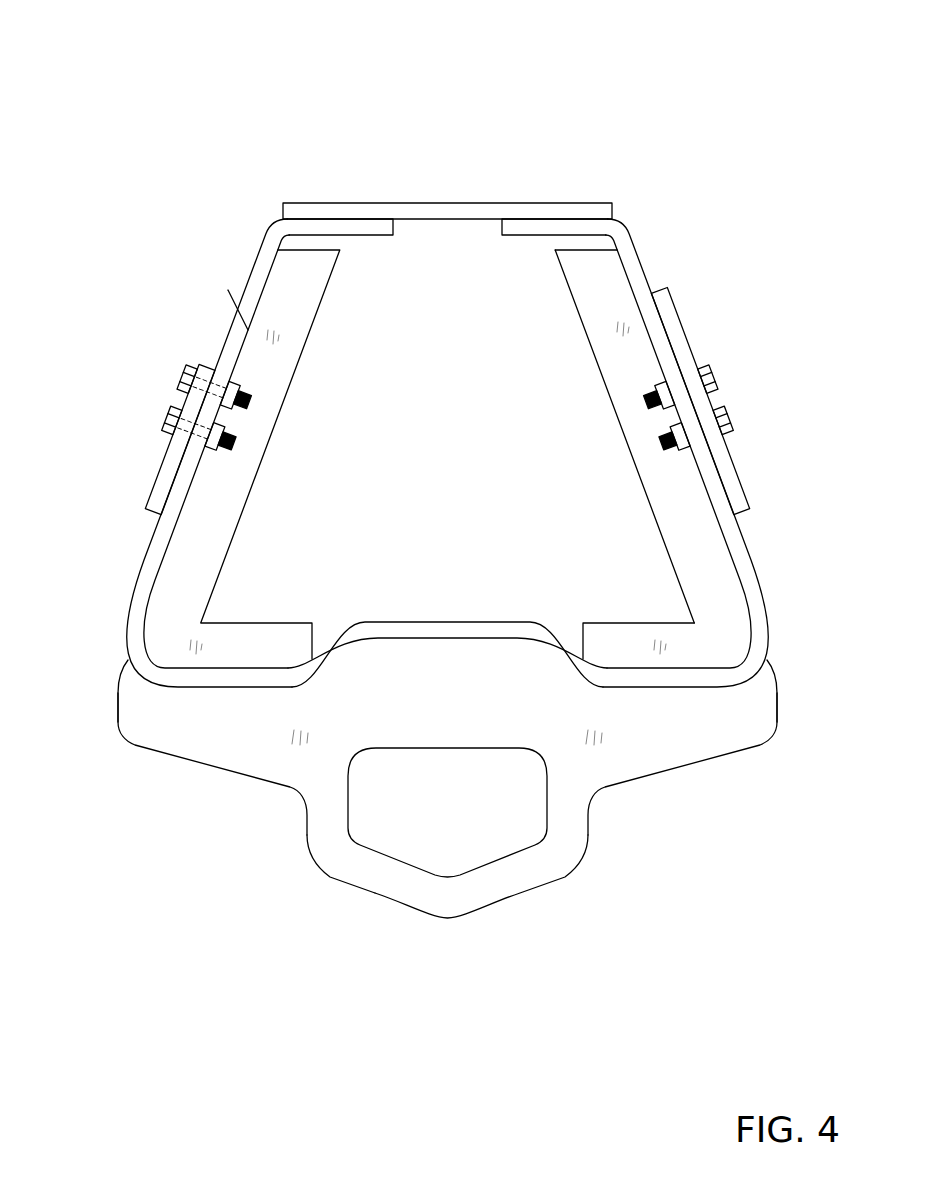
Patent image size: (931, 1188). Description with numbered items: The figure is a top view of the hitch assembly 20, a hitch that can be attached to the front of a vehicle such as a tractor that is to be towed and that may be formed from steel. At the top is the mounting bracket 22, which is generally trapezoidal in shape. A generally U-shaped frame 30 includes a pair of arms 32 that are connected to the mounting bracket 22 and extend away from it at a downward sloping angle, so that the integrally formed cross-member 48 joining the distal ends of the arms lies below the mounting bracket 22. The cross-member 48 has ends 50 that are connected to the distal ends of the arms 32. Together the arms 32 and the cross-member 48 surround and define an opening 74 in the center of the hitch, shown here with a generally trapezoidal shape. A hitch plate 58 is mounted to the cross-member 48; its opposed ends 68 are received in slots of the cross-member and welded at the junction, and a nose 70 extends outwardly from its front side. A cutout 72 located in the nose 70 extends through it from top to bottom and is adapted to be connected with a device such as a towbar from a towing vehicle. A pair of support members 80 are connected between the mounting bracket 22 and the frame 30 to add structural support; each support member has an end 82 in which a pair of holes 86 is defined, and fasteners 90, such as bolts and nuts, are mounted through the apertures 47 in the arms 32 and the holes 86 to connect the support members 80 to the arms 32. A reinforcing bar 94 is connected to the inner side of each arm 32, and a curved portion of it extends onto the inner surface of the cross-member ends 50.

The hitch assembly 20 is at (225, 111).
The mounting bracket 22 is at (412, 201).
The frame 30 is at (769, 599).
The arm 32 is at (263, 312).
The aperture 47 is at (223, 375).
The cross-member 48 is at (439, 620).
The cross-member end 50 is at (687, 687).
The hitch plate 58 is at (358, 896).
The opposed end 68 is at (118, 702).
The nose 70 is at (430, 914).
The cutout 72 is at (472, 838).
The opening 74 is at (466, 455).
The support member 80 is at (671, 287).
The support member end 82 is at (148, 496).
The hole 86 is at (203, 372).
The fastener 90 is at (185, 380).
The reinforcing bar 94 is at (668, 553).